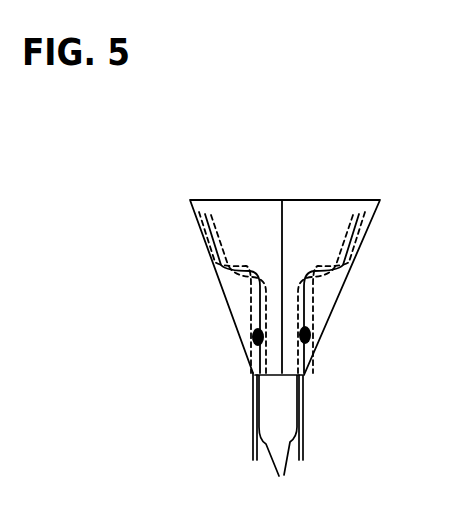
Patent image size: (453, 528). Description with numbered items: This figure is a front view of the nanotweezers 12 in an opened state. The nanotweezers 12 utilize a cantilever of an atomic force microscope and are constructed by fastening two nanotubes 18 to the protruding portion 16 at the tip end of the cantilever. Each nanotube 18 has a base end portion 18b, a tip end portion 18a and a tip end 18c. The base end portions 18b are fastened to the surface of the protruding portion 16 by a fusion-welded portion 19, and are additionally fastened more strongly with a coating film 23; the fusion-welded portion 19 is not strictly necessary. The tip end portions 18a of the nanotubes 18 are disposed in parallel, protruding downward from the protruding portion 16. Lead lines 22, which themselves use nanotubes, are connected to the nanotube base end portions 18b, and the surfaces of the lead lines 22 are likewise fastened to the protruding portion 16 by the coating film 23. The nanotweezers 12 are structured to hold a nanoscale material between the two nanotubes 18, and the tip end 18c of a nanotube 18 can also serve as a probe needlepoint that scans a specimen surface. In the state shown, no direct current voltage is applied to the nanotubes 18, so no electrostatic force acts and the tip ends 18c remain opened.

The nanotweezers 12 is at (269, 172).
The protruding portion 16 is at (318, 213).
The nanotube 18 is at (278, 444).
The tip end portion 18a is at (317, 380).
The base end portion 18b is at (332, 337).
The tip end 18c is at (303, 460).
The fusion-welded portion 19 is at (254, 338).
The lead line 22 is at (222, 283).
The coating film 23 is at (198, 243).